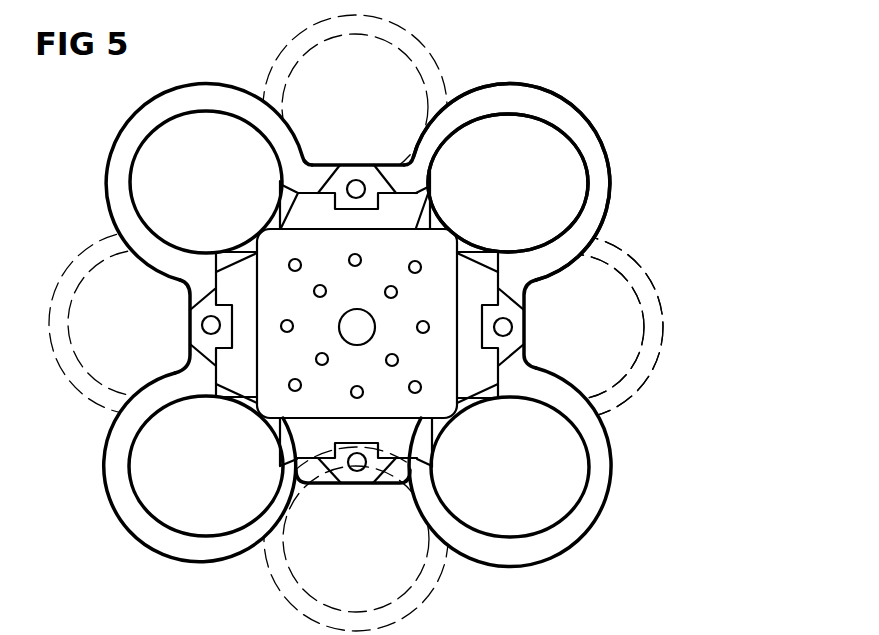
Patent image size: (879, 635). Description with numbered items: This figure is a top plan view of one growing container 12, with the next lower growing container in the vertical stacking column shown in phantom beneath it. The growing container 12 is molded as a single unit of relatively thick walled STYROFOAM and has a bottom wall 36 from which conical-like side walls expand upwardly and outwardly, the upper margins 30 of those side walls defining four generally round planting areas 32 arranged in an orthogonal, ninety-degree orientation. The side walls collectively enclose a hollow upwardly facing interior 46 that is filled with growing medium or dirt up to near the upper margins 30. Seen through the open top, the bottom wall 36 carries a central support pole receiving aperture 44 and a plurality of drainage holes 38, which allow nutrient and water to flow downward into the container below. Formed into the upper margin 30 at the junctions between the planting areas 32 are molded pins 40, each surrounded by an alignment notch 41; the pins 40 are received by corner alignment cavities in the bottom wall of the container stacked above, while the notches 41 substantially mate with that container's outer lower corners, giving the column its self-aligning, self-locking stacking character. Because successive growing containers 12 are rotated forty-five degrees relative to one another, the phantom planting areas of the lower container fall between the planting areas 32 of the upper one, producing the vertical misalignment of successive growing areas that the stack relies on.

The growing container 12 is at (587, 121).
The upper margin 30 is at (593, 163).
The planting area 32 is at (506, 151).
The bottom wall 36 is at (424, 364).
The drainage hole 38 is at (417, 393).
The molded pin 40 is at (514, 326).
The alignment notch 41 is at (523, 305).
The central support pole receiving aperture 44 is at (338, 335).
The hollow upwardly facing interior 46 is at (328, 380).